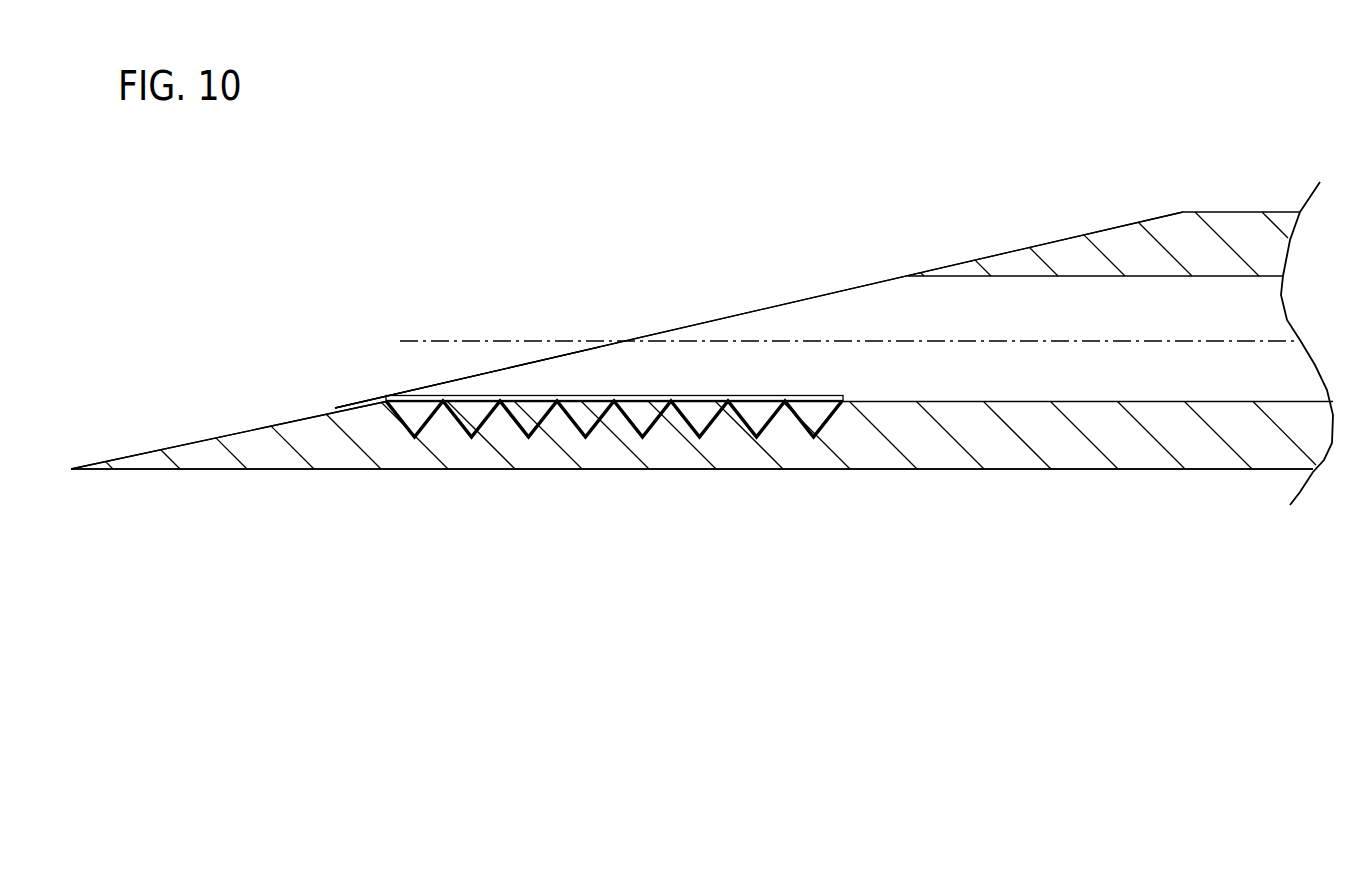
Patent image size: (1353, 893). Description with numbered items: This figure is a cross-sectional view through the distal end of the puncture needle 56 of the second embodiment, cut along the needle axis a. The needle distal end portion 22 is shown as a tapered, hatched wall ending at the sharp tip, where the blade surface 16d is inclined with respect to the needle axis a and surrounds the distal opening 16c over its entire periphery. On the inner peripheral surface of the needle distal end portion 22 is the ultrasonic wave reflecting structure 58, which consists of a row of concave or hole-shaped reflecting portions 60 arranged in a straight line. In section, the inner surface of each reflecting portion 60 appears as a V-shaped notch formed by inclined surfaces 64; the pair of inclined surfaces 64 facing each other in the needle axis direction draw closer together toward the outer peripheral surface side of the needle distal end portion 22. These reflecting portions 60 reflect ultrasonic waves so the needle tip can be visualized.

The puncture needle 56 is at (463, 169).
The distal opening 16c is at (805, 295).
The blade surface 16d is at (290, 415).
The needle distal end portion 22 is at (407, 473).
The ultrasonic wave reflecting structure 58 is at (410, 378).
The reflecting portion 60 is at (588, 412).
The inclined surface 64 is at (520, 412).
The axis a is at (841, 337).